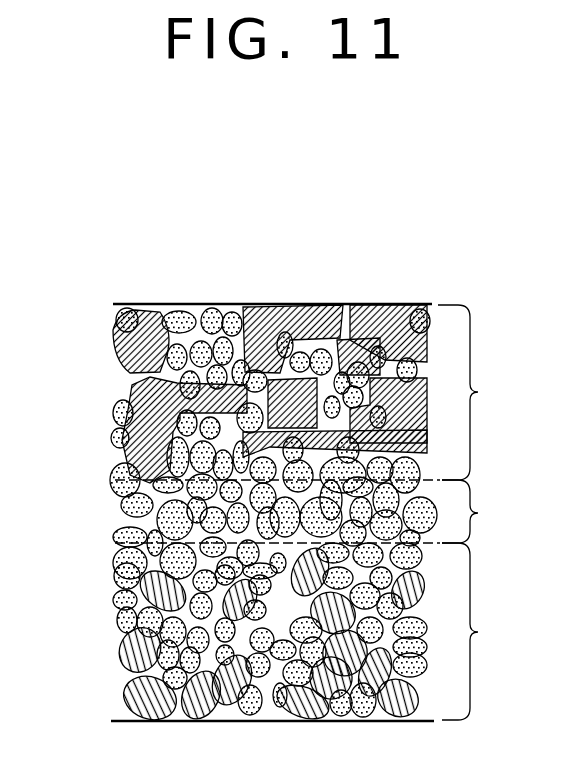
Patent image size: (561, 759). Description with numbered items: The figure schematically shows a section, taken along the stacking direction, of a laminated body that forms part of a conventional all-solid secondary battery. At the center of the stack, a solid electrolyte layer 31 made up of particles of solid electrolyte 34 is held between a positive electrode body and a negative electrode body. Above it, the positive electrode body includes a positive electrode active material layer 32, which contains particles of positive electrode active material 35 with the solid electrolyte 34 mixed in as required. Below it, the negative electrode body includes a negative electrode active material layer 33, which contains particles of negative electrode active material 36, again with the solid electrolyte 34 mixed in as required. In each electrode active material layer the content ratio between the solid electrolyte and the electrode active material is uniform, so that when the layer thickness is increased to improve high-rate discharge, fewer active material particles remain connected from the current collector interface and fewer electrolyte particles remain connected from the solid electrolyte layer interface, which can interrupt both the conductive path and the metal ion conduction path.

The solid electrolyte layer 31 is at (313, 506).
The positive electrode active material layer 32 is at (314, 394).
The negative electrode active material layer 33 is at (315, 632).
The solid electrolyte 34 is at (118, 511).
The positive electrode active material 35 is at (115, 358).
The negative electrode active material 36 is at (120, 653).